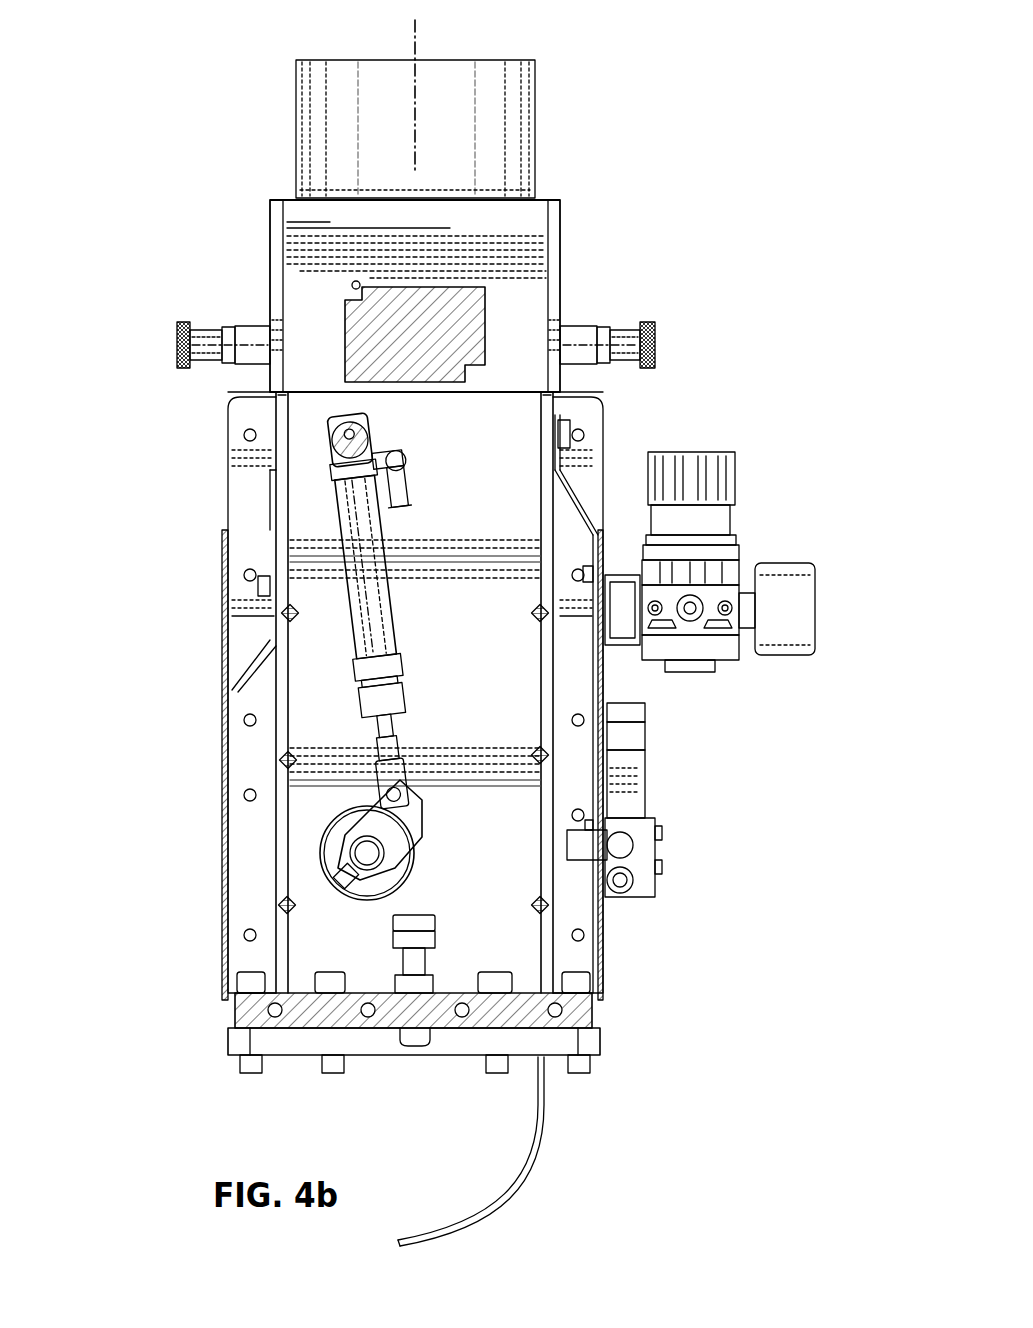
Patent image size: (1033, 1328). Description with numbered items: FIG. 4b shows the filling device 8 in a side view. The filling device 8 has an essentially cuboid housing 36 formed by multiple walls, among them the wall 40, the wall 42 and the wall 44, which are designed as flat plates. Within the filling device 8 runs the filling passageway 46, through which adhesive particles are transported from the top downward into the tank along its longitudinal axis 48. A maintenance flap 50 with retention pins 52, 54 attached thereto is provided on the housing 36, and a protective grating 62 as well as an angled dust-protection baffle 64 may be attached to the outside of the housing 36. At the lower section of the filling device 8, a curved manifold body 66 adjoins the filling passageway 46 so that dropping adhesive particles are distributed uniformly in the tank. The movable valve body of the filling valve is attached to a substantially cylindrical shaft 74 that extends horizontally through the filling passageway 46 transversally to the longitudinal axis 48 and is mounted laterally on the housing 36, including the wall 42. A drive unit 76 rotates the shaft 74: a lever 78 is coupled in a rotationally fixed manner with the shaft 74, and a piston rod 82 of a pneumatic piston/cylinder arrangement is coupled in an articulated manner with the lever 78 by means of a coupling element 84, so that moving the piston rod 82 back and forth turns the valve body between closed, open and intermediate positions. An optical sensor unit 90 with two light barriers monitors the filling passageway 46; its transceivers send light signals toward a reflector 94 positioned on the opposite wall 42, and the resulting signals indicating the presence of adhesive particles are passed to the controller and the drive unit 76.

The filling device 8 is at (641, 56).
The housing 36 is at (351, 696).
The wall 40 is at (278, 800).
The wall 42 is at (312, 609).
The wall 44 is at (437, 802).
The filling passageway 46 is at (352, 48).
The longitudinal axis 48 is at (415, 48).
The maintenance flap 50 is at (555, 250).
The retention pin 52 is at (177, 342).
The retention pin 54 is at (618, 334).
The protective grating 62 is at (228, 905).
The baffle 64 is at (236, 666).
The manifold body 66 is at (535, 1150).
The shaft 74 is at (350, 852).
The drive unit 76 is at (540, 757).
The lever 78 is at (410, 820).
The piston rod 82 is at (365, 728).
The coupling element 84 is at (372, 772).
The sensor unit 90 is at (525, 355).
The reflector 94 is at (445, 320).